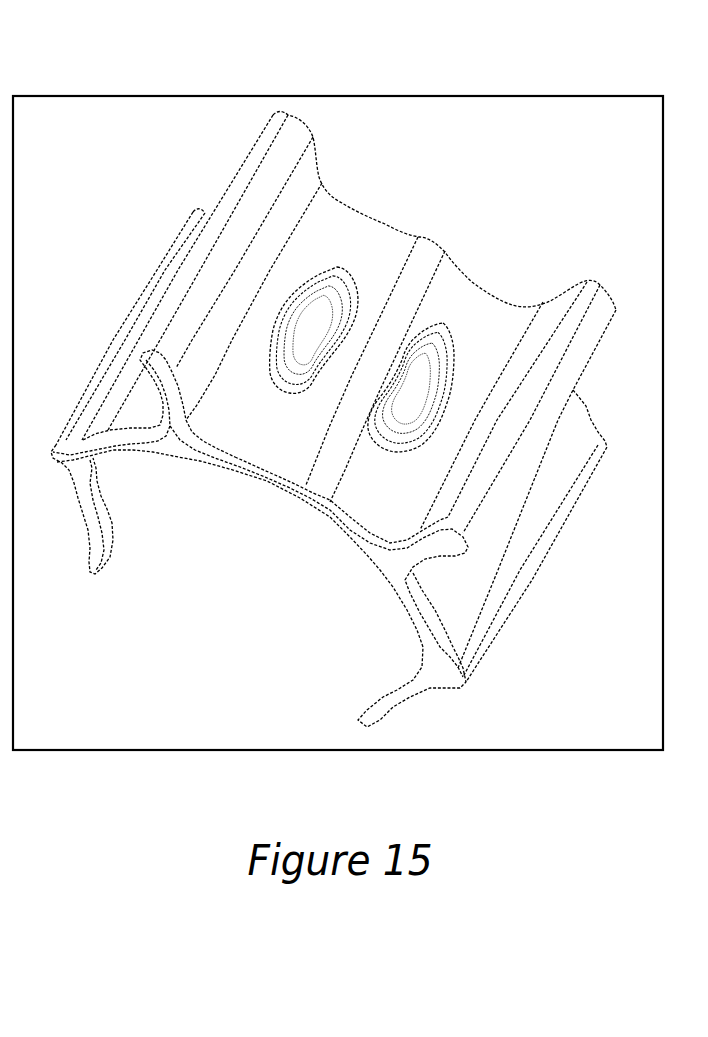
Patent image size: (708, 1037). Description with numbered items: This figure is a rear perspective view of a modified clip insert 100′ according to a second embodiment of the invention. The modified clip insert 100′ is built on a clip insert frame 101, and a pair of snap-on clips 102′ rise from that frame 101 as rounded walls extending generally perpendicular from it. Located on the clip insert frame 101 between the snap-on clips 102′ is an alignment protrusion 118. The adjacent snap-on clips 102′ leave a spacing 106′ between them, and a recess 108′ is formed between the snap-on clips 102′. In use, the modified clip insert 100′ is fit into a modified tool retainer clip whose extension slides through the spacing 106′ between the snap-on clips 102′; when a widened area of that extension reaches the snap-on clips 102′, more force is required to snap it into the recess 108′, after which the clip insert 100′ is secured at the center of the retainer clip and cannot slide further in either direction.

The modified clip insert 100′ is at (590, 83).
The snap-on clip 102′ is at (352, 272).
The alignment protrusion 118 is at (432, 257).
The recess 108′ is at (322, 422).
The spacing 106′ is at (355, 425).
The clip insert frame 101 is at (370, 547).